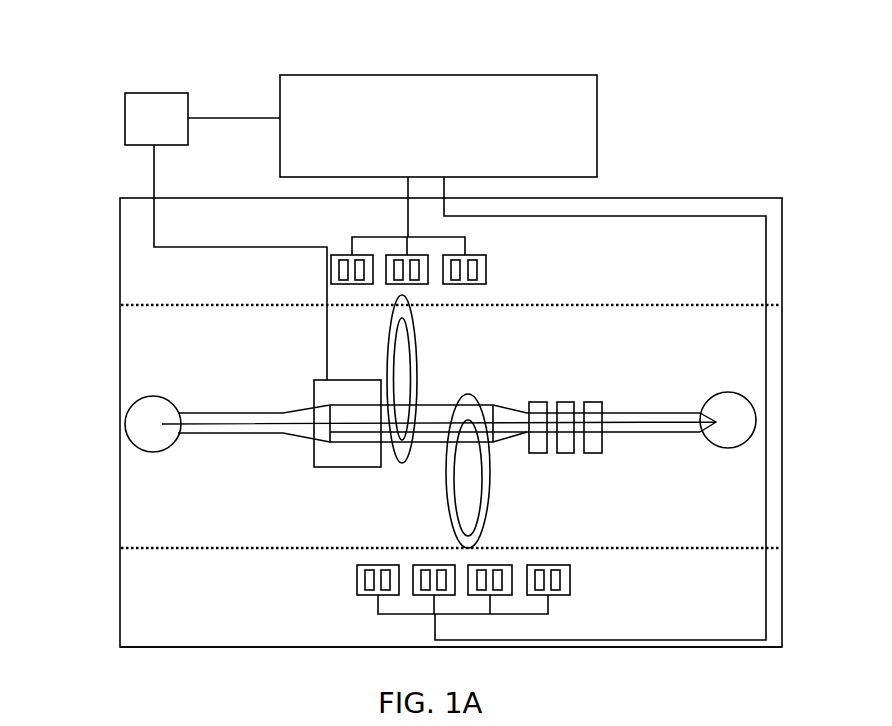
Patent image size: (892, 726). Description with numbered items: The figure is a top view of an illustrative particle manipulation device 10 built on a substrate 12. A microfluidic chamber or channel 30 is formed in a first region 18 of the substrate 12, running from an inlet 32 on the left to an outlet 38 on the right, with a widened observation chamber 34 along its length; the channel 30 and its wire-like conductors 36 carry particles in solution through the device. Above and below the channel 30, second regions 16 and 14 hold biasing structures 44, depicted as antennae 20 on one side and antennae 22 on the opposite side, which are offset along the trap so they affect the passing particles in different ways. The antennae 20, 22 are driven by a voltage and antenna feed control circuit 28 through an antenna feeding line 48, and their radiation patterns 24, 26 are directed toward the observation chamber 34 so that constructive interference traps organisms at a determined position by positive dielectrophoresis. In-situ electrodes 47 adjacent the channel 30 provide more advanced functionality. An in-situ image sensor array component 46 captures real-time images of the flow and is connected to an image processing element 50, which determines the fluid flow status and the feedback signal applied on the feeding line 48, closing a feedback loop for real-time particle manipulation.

The particle manipulation device 10 is at (117, 268).
The substrate 12 is at (138, 600).
The second region 14 is at (701, 605).
The second region 16 is at (722, 262).
The first region 18 is at (715, 358).
The antennae 20 is at (486, 268).
The antennae 22 is at (415, 566).
The radiation pattern 24 is at (416, 351).
The radiation pattern 26 is at (490, 474).
The voltage and antenna feed control circuit 28 is at (597, 113).
The microfluidic channel 30 is at (226, 410).
The inlet 32 is at (153, 452).
The observation chamber 34 is at (433, 443).
The wire 36 is at (206, 433).
The outlet 38 is at (713, 443).
The biasing structures 44 is at (340, 250).
The image sensor array component 46 is at (337, 380).
The in-situ electrodes 47 is at (538, 453).
The antenna feeding line 48 is at (766, 387).
The image processing element 50 is at (155, 92).